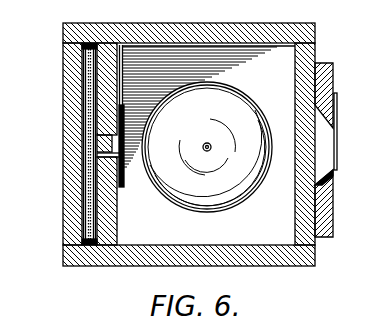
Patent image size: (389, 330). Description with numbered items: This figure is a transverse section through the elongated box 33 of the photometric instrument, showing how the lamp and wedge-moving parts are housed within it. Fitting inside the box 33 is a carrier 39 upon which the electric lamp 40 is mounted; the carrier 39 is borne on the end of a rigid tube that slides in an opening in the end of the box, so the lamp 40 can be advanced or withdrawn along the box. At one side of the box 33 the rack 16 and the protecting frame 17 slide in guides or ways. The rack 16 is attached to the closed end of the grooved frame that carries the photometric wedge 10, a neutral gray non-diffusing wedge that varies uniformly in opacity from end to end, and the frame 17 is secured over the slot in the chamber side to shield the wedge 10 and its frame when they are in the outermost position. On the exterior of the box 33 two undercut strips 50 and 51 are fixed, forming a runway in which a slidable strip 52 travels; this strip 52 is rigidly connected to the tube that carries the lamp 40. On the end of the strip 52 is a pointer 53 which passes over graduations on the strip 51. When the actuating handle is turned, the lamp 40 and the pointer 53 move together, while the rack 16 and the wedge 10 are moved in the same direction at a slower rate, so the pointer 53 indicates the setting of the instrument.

The photometric wedge 10 is at (88, 78).
The rack 16 is at (123, 168).
The frame 17 is at (93, 44).
The elongated box 33 is at (199, 33).
The carrier 39 is at (297, 46).
The electric lamp 40 is at (240, 112).
The undercut strip 50 is at (332, 202).
The undercut strip 51 is at (331, 74).
The slidable strip 52 is at (334, 170).
The pointer 53 is at (338, 108).